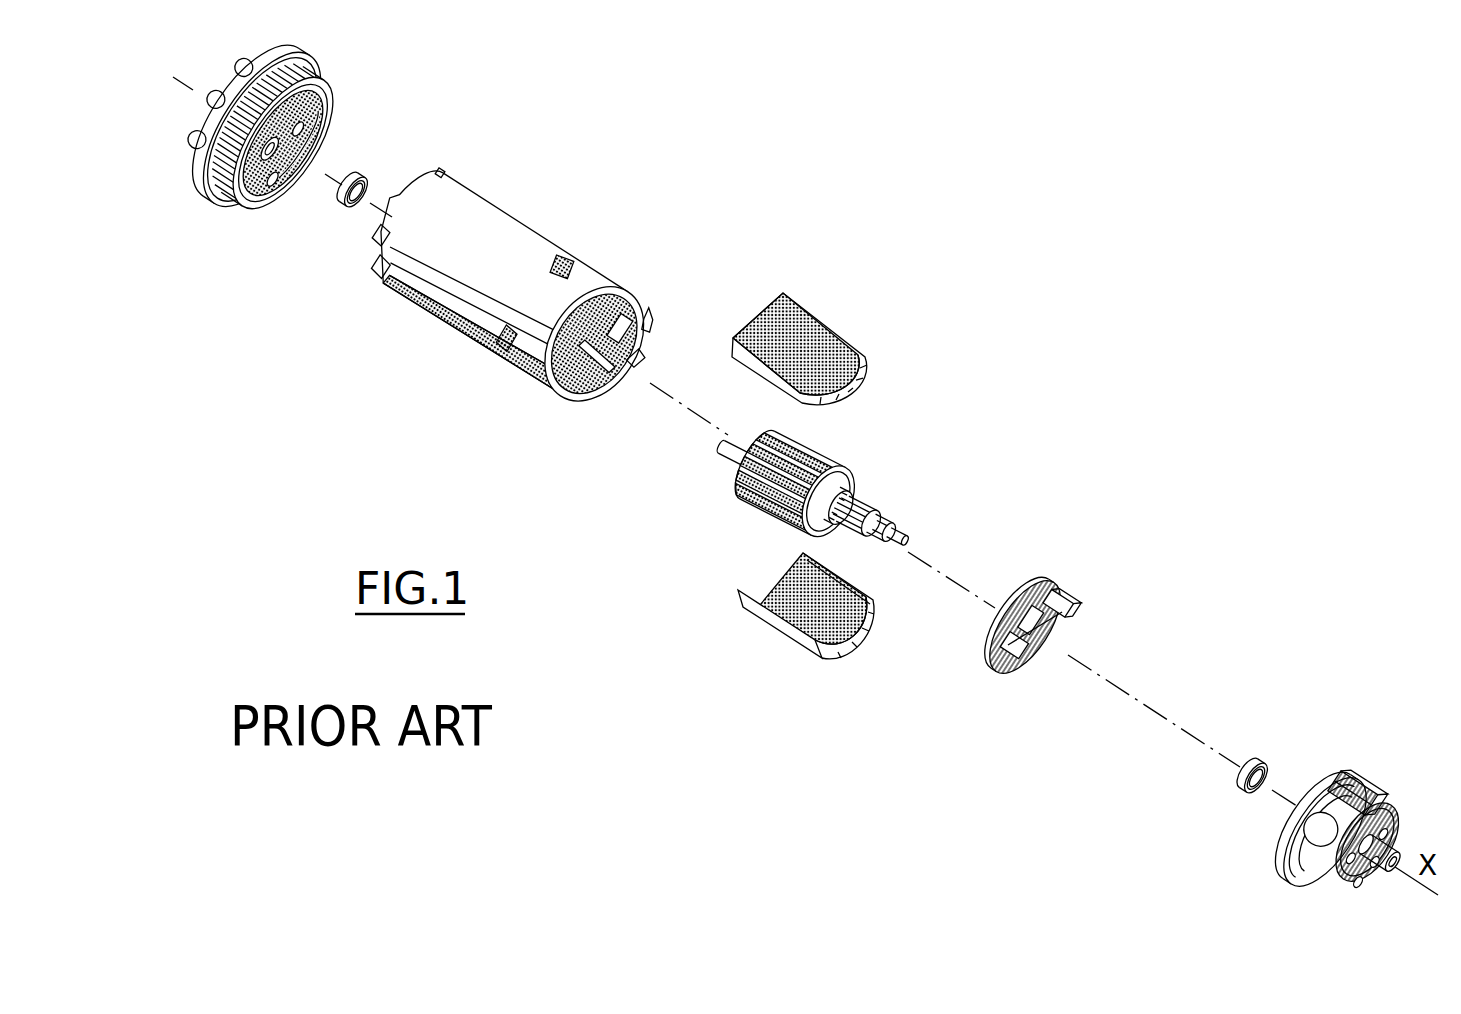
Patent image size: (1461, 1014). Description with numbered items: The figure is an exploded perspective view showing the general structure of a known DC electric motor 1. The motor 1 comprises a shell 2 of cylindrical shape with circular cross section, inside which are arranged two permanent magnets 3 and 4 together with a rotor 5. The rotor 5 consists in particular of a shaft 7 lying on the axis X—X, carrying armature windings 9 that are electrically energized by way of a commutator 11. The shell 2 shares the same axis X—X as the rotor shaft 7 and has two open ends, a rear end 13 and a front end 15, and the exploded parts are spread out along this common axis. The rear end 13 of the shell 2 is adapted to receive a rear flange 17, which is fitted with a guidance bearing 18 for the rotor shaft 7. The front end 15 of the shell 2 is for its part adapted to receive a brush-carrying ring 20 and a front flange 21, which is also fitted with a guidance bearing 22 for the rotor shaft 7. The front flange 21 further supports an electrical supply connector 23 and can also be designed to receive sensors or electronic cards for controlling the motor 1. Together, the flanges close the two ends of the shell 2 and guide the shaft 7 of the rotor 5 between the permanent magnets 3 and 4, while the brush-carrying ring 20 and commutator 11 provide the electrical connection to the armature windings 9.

The motor 1 is at (808, 166).
The shell 2 is at (583, 192).
The permanent magnet 3 is at (834, 313).
The permanent magnet 4 is at (840, 661).
The rotor 5 is at (881, 497).
The shaft 7 is at (898, 537).
The armature windings 9 is at (735, 453).
The commutator 11 is at (883, 528).
The rear end 13 is at (479, 163).
The front end 15 is at (643, 339).
The rear flange 17 is at (333, 72).
The guidance bearing 18 is at (371, 166).
The brush-carrying ring 20 is at (1049, 571).
The front flange 21 is at (1386, 762).
The guidance bearing 22 is at (1268, 752).
The electrical supply connector 23 is at (1380, 798).